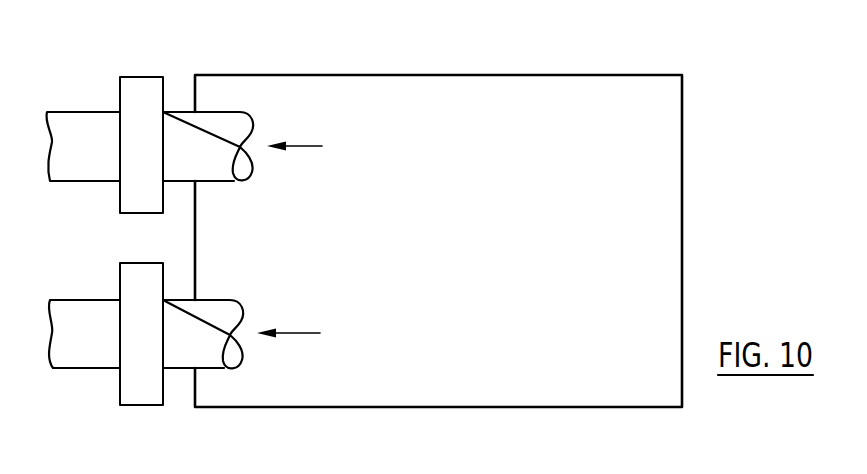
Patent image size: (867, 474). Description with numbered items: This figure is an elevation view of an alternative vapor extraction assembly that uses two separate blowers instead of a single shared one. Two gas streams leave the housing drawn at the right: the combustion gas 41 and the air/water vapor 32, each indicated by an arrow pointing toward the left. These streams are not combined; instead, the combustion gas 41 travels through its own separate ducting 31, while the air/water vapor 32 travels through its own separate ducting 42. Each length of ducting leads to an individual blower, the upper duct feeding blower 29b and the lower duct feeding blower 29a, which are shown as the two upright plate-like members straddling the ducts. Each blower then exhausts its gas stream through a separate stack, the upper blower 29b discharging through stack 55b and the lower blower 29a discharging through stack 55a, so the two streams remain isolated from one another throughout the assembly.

The stack 55b is at (92, 111).
The stack 55a is at (103, 372).
The blower 29b is at (138, 77).
The blower 29a is at (142, 407).
The ducting 31 is at (177, 111).
The ducting 42 is at (178, 371).
The combustion gas 41 is at (303, 143).
The air/water vapor 32 is at (300, 337).